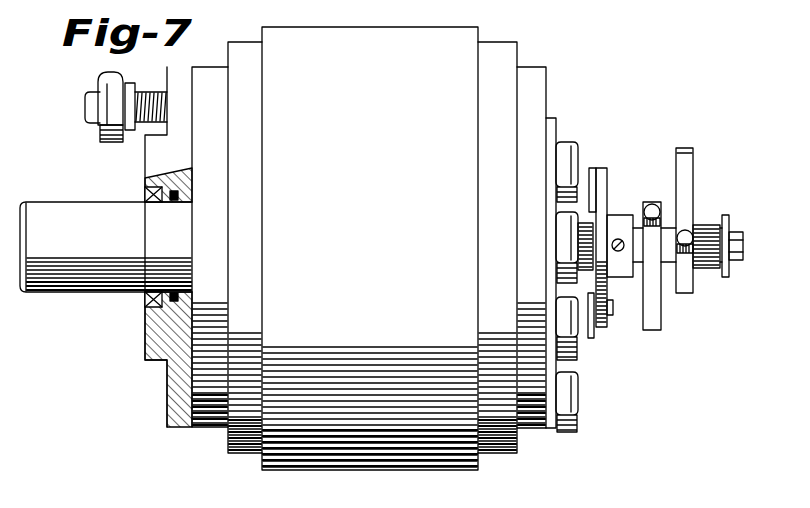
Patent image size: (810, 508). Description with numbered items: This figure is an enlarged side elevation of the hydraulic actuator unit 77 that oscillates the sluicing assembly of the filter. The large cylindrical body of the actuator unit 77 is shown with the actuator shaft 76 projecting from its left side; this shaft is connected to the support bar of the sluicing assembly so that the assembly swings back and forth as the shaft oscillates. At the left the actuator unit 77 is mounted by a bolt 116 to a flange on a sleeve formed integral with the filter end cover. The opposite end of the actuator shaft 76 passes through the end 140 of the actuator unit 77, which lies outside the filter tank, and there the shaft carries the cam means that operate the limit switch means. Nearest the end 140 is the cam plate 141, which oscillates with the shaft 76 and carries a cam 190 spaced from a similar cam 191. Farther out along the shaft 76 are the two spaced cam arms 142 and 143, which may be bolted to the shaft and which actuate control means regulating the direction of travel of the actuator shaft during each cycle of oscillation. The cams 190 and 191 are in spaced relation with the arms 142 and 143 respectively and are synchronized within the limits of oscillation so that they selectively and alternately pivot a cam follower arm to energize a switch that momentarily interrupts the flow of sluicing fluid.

The hydraulic actuator unit 77 is at (404, 14).
The end of the actuator unit 140 is at (539, 86).
The actuator shaft 76 is at (96, 212).
The bolt 116 is at (100, 133).
The cam 190 is at (588, 172).
The cam plate 141 is at (601, 214).
The cam 191 is at (592, 338).
The cam arm 143 is at (655, 330).
The cam arm 142 is at (688, 184).